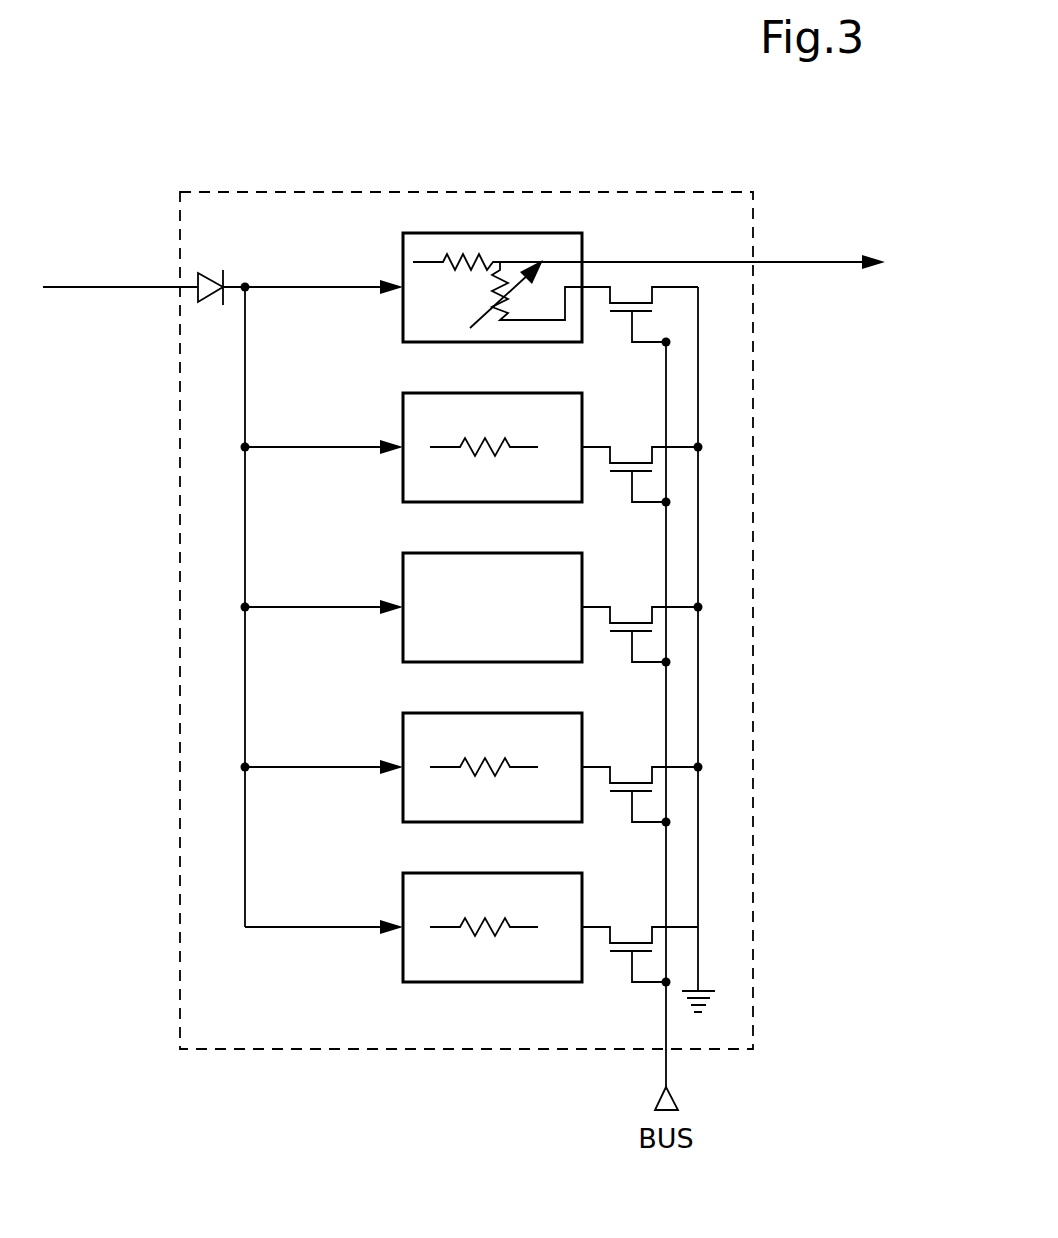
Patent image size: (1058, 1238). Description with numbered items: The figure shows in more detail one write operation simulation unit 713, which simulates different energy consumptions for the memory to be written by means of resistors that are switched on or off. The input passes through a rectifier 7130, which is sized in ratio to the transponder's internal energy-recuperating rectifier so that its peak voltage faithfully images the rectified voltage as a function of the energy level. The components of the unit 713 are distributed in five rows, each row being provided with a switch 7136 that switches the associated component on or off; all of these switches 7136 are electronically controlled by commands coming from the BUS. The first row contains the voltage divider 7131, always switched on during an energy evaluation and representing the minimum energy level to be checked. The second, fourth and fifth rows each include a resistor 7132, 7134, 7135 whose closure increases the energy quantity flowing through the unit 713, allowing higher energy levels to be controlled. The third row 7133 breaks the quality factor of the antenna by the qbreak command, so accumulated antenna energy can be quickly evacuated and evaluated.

The write operation simulation unit 713 is at (210, 660).
The rectifier 7130 is at (215, 274).
The voltage divider 7131 is at (419, 308).
The resistor 7132 is at (419, 470).
The third row 7133 is at (419, 630).
The resistor 7134 is at (419, 790).
The resistor 7135 is at (419, 950).
The switch 7136 is at (715, 637).